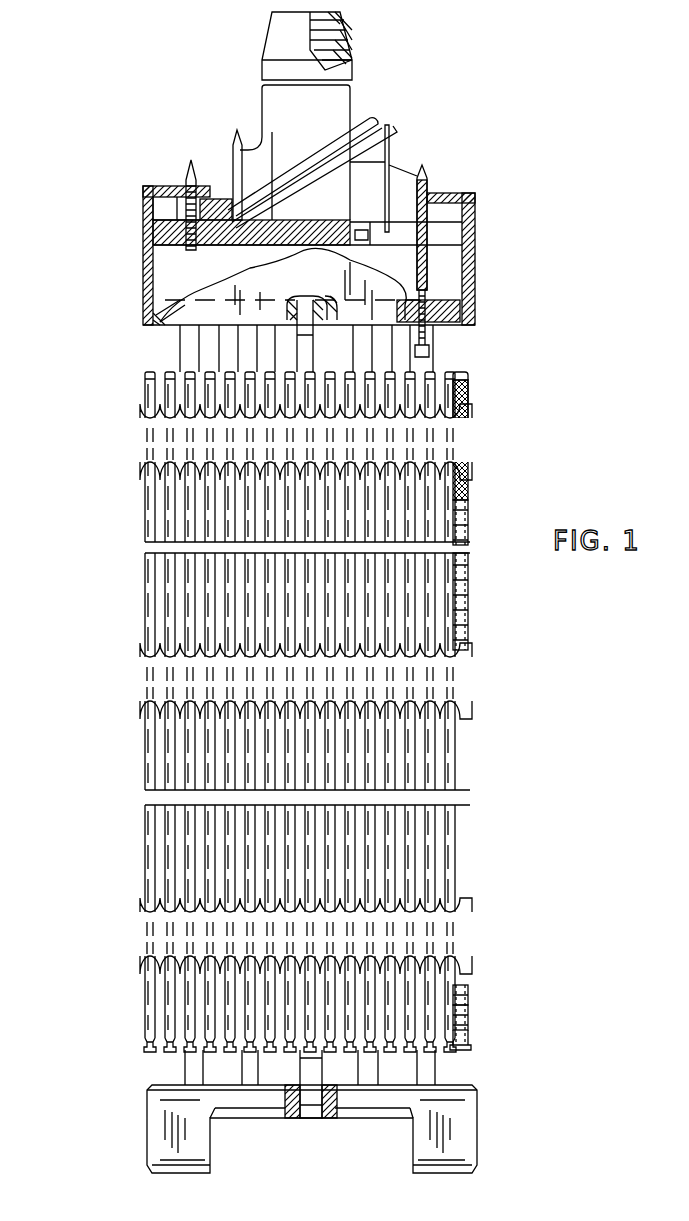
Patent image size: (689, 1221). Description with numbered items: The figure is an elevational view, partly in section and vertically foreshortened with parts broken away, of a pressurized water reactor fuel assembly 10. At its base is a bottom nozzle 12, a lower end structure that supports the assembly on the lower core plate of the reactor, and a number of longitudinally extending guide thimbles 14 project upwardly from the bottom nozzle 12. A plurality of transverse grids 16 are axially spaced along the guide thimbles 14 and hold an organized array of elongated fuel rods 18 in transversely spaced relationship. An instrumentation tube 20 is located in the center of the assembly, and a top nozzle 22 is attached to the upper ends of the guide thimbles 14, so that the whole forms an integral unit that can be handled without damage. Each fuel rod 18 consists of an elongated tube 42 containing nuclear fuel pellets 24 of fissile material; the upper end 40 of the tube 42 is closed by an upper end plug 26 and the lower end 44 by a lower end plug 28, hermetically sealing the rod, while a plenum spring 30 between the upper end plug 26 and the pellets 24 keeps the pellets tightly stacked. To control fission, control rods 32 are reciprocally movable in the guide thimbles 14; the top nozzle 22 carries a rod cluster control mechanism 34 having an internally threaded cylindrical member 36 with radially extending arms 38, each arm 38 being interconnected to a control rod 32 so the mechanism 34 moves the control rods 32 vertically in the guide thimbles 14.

The fuel assembly 10 is at (92, 404).
The bottom nozzle 12 is at (477, 1120).
The guide thimbles 14 is at (440, 349).
The transverse grids 16 is at (143, 452).
The fuel rods 18 is at (147, 606).
The instrumentation tube 20 is at (306, 1108).
The top nozzle 22 is at (475, 283).
The nuclear fuel pellets 24 is at (468, 531).
The upper end plug 26 is at (469, 366).
The lower end plug 28 is at (462, 1048).
The plenum spring 30 is at (470, 428).
The control rods 32 is at (426, 285).
The rod cluster control mechanism 34 is at (352, 92).
The internally threaded cylindrical member 36 is at (343, 42).
The radially extending arms 38 is at (236, 148).
The upper end 40 is at (472, 401).
The elongated tube 42 is at (470, 477).
The lower end 44 is at (470, 1018).